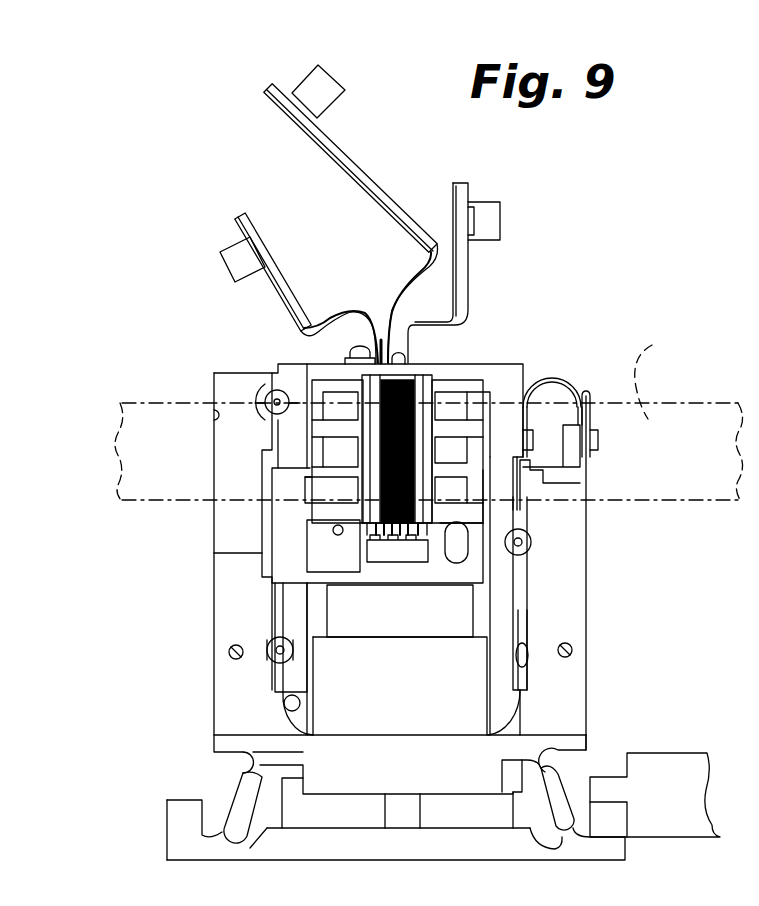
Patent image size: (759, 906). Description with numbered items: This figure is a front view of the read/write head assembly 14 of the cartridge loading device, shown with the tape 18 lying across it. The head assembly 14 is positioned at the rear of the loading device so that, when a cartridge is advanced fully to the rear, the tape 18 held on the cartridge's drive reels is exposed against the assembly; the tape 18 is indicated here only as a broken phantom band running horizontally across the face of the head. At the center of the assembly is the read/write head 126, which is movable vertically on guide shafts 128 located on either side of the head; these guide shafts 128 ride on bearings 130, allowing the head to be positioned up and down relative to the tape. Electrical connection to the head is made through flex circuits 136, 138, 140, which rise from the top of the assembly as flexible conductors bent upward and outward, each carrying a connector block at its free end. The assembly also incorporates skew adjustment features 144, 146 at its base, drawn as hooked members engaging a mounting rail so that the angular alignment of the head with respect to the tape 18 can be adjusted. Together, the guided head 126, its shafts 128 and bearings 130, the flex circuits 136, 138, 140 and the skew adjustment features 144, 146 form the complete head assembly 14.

The read/write head assembly 14 is at (443, 603).
The tape 18 is at (652, 346).
The read/write head 126 is at (418, 374).
The guide shafts 128 is at (262, 627).
The bearings 130 is at (530, 546).
The flex circuit 136 is at (282, 273).
The flex circuit 138 is at (338, 143).
The flex circuit 140 is at (473, 256).
The skew adjustment feature 144 is at (246, 794).
The skew adjustment feature 146 is at (552, 783).